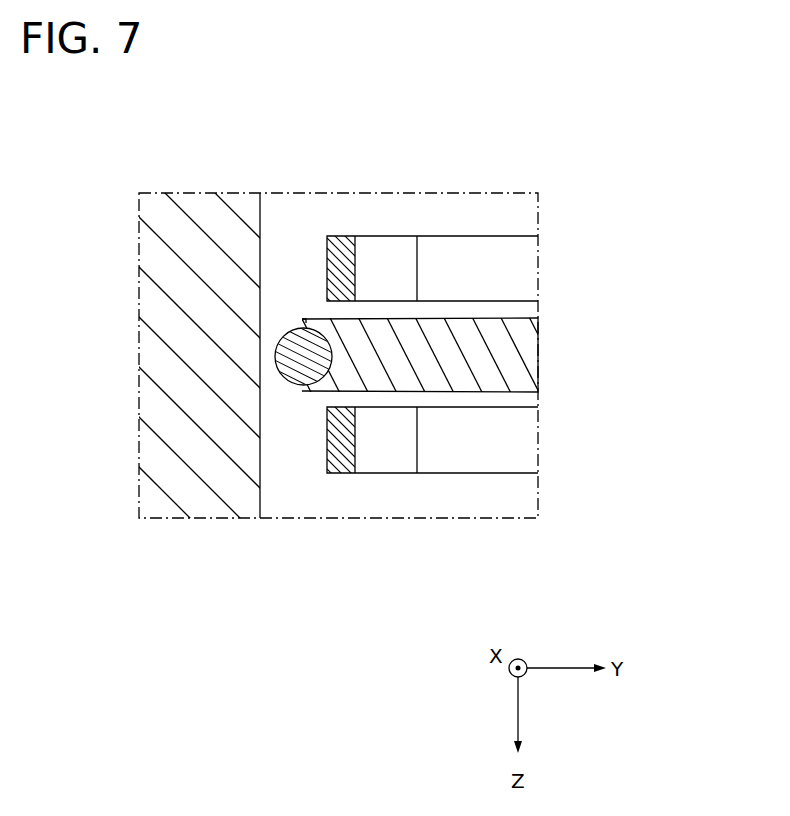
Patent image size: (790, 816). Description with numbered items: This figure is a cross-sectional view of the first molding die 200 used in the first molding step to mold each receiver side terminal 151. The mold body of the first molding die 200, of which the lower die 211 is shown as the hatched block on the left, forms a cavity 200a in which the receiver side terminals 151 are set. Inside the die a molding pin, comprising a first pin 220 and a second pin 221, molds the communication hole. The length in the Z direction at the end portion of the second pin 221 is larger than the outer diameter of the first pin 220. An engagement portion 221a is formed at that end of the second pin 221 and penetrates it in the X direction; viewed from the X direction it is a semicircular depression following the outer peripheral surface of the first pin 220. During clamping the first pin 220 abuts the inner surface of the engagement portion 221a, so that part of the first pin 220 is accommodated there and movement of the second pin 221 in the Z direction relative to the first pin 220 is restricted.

The first molding die 200 is at (88, 202).
The cavity 200a is at (293, 496).
The lower die 211 is at (188, 358).
The receiver side terminal 151 is at (392, 237).
The first pin 220 is at (275, 355).
The second pin 221 is at (437, 352).
The engagement portion 221a is at (292, 328).